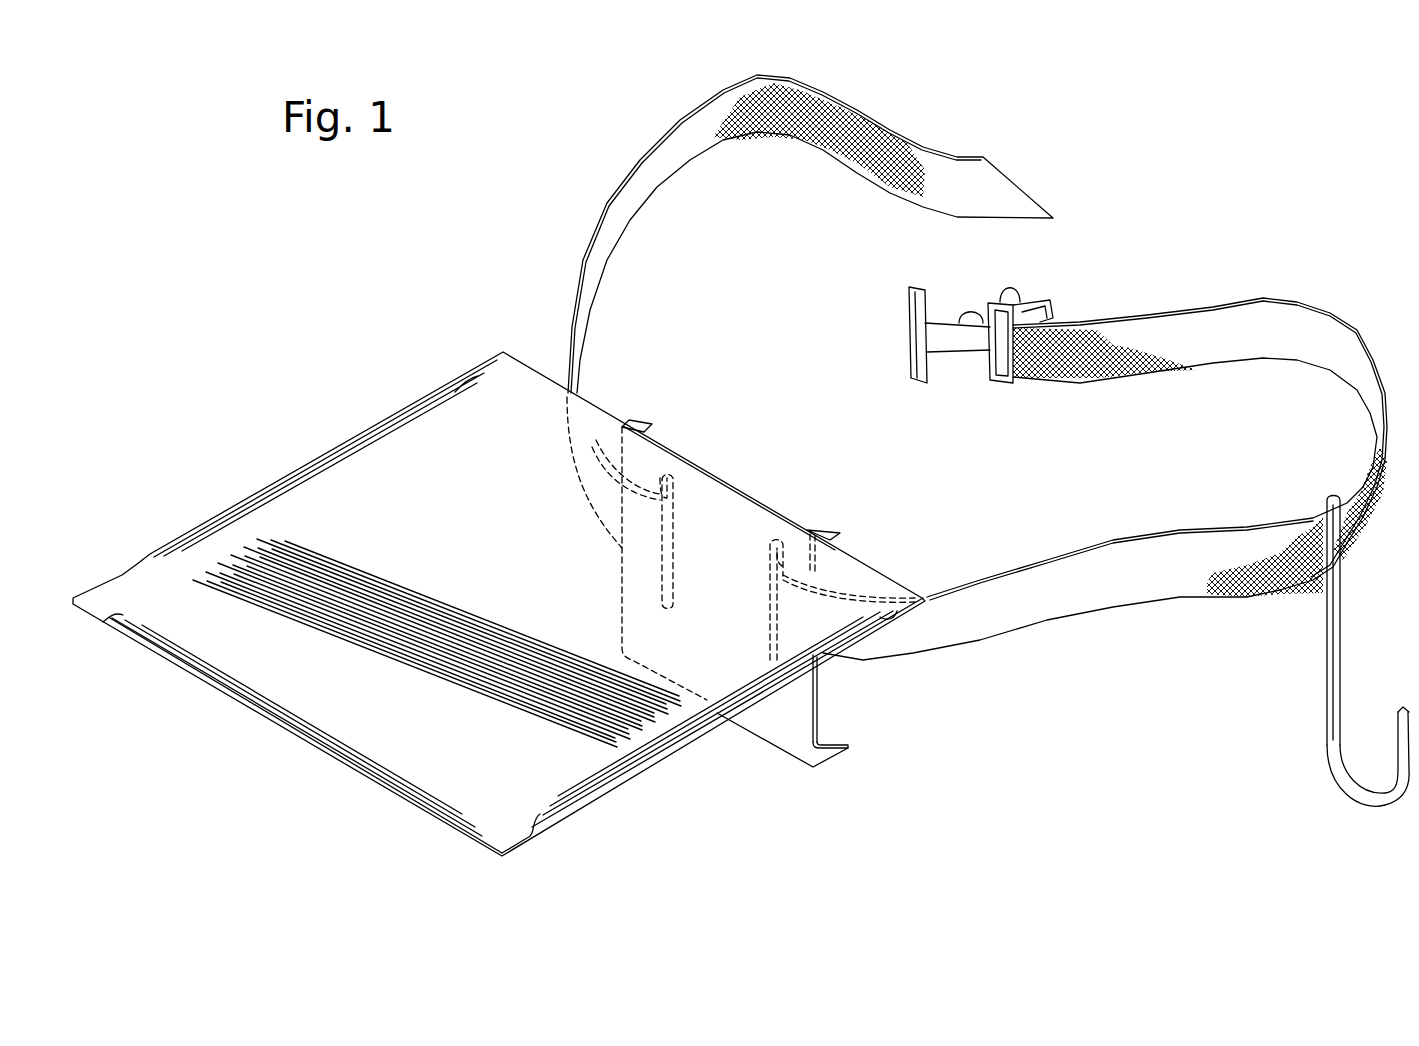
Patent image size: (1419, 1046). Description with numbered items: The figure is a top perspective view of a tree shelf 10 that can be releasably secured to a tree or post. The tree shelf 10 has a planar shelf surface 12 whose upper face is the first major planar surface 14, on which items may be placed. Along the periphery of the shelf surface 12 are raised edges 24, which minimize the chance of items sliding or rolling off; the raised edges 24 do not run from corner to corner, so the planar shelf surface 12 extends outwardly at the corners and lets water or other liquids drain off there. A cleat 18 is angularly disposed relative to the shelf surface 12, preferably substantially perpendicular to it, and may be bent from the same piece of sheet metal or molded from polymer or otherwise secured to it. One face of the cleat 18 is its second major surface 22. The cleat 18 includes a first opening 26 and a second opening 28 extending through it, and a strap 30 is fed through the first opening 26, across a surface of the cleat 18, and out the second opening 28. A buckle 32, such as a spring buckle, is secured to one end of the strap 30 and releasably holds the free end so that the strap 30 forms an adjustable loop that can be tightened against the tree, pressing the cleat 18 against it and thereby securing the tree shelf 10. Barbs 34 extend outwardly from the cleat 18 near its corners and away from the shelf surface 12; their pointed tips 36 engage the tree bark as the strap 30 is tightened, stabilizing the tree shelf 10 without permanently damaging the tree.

The tree shelf 10 is at (1210, 150).
The shelf surface 12 is at (222, 468).
The first major planar surface 14 is at (484, 550).
The cleat 18 is at (842, 704).
The second major surface 22 is at (772, 730).
The raised edges 24 is at (354, 431).
The first opening 26 is at (674, 488).
The second opening 28 is at (776, 545).
The strap 30 is at (1064, 570).
The buckle 32 is at (1040, 270).
The barbs 34 is at (640, 424).
The pointed tips 36 is at (850, 522).